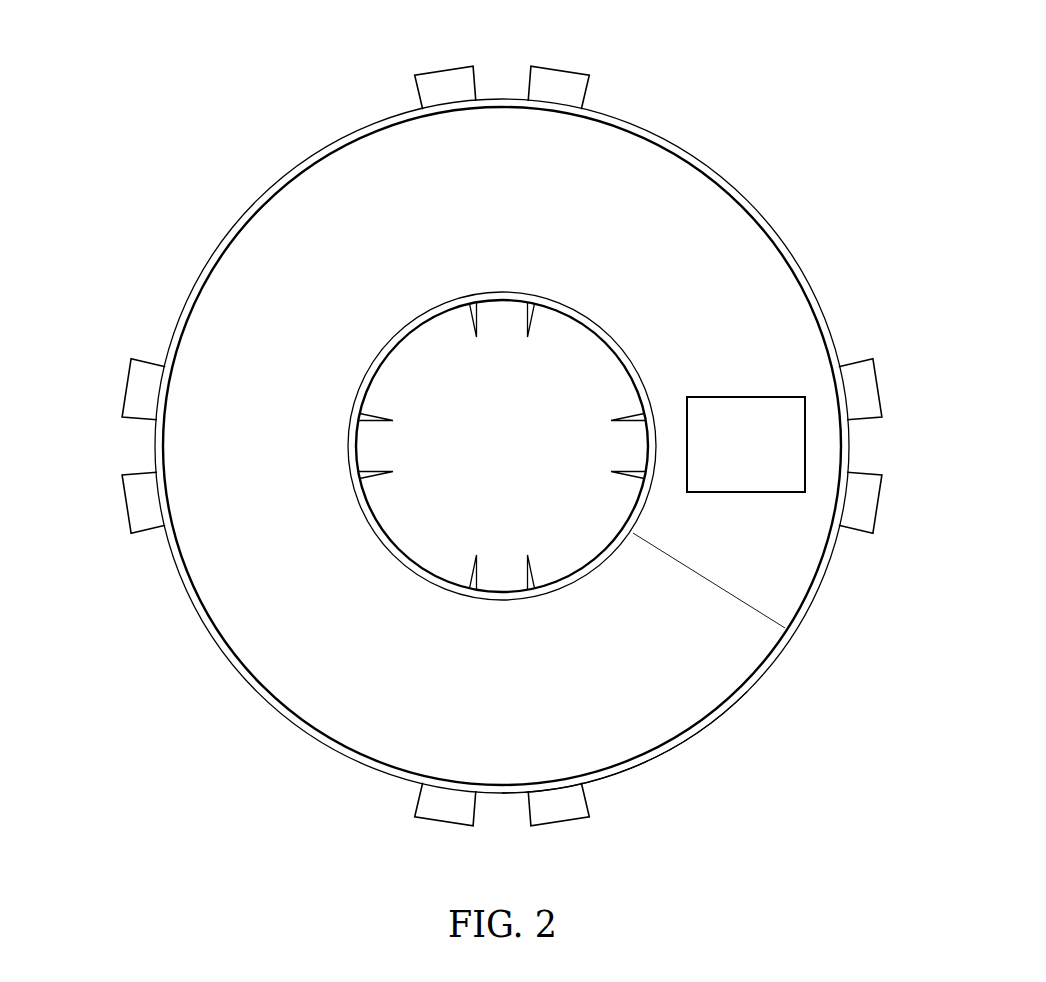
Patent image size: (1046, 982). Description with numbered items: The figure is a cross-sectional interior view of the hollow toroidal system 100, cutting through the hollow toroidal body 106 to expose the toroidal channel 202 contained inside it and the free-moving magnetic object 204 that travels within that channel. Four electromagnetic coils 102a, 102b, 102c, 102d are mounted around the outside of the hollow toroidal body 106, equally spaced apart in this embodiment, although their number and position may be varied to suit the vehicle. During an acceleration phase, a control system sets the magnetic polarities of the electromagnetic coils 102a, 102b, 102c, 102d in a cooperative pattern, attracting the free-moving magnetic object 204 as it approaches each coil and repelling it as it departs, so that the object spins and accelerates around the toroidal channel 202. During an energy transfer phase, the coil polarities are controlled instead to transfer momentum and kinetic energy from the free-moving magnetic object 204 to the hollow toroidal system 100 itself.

The hollow toroidal system 100 is at (746, 197).
The hollow toroidal body 106 is at (716, 716).
The toroidal channel 202 is at (268, 632).
The free-moving magnetic object 204 is at (748, 396).
The electromagnetic coil 102a is at (870, 503).
The electromagnetic coil 102b is at (447, 80).
The electromagnetic coil 102c is at (133, 392).
The electromagnetic coil 102d is at (557, 816).